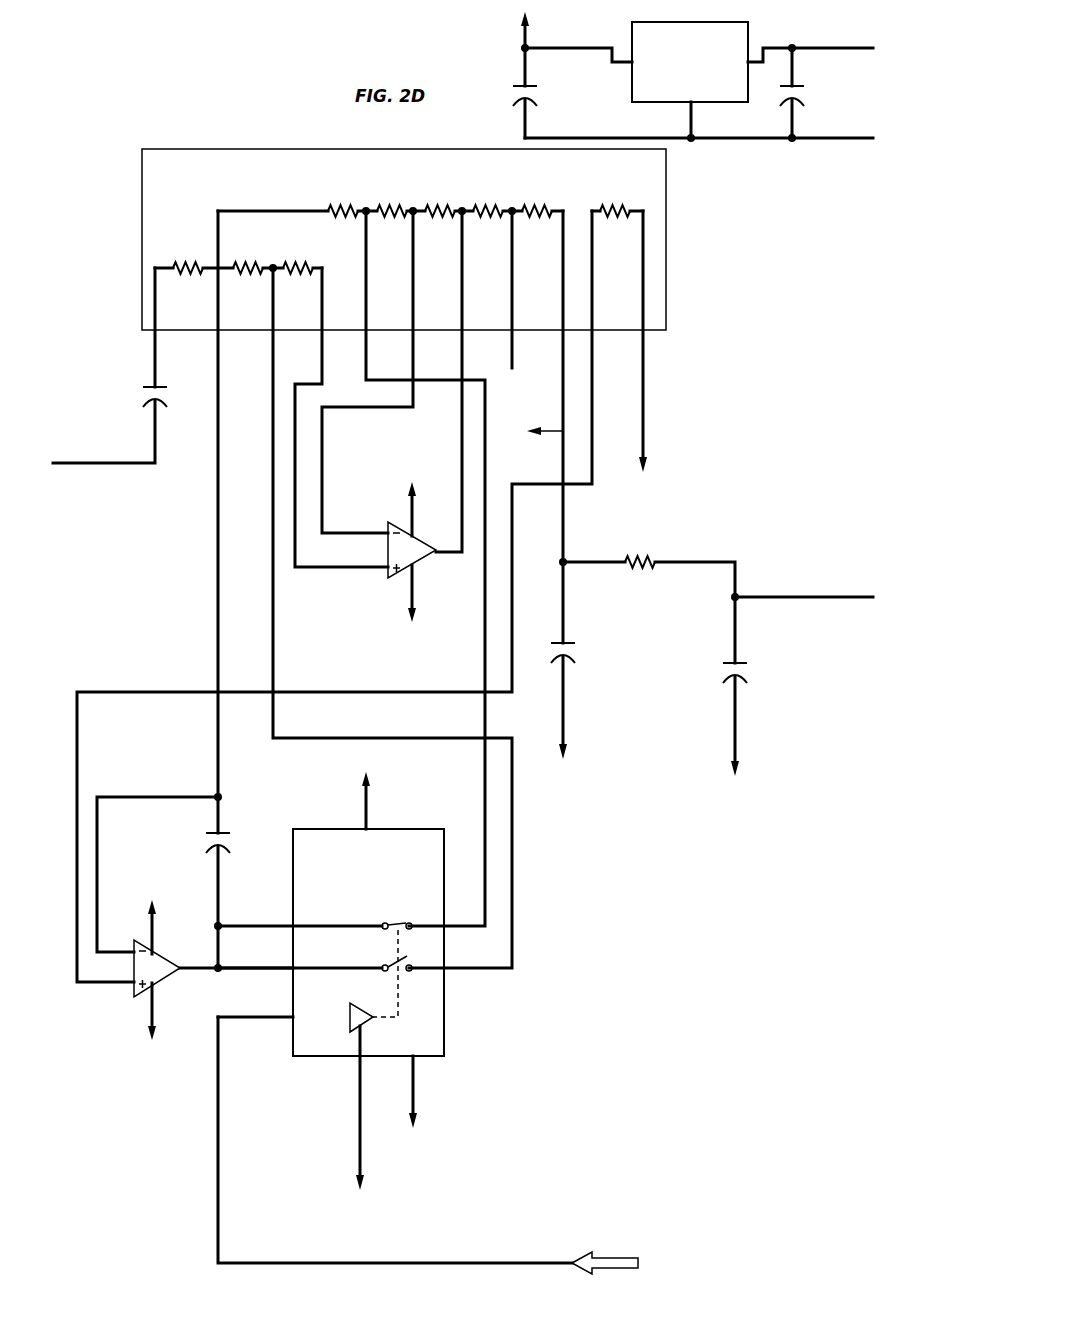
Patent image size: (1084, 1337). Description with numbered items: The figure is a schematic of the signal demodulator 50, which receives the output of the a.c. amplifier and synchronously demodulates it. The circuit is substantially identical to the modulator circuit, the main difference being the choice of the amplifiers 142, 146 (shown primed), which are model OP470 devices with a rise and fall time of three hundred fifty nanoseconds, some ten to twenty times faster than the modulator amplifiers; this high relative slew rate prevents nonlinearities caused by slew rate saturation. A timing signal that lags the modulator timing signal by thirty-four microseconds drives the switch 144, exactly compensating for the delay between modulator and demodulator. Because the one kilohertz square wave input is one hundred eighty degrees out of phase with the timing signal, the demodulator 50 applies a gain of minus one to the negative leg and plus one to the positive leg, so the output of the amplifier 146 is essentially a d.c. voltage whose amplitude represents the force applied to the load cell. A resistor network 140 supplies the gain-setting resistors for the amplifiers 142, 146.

The signal demodulator 50 is at (108, 166).
The resistor network RN2 140 is at (666, 268).
The amplifier 142 is at (112, 1003).
The switch 144 is at (444, 1040).
The amplifier 146 is at (368, 590).